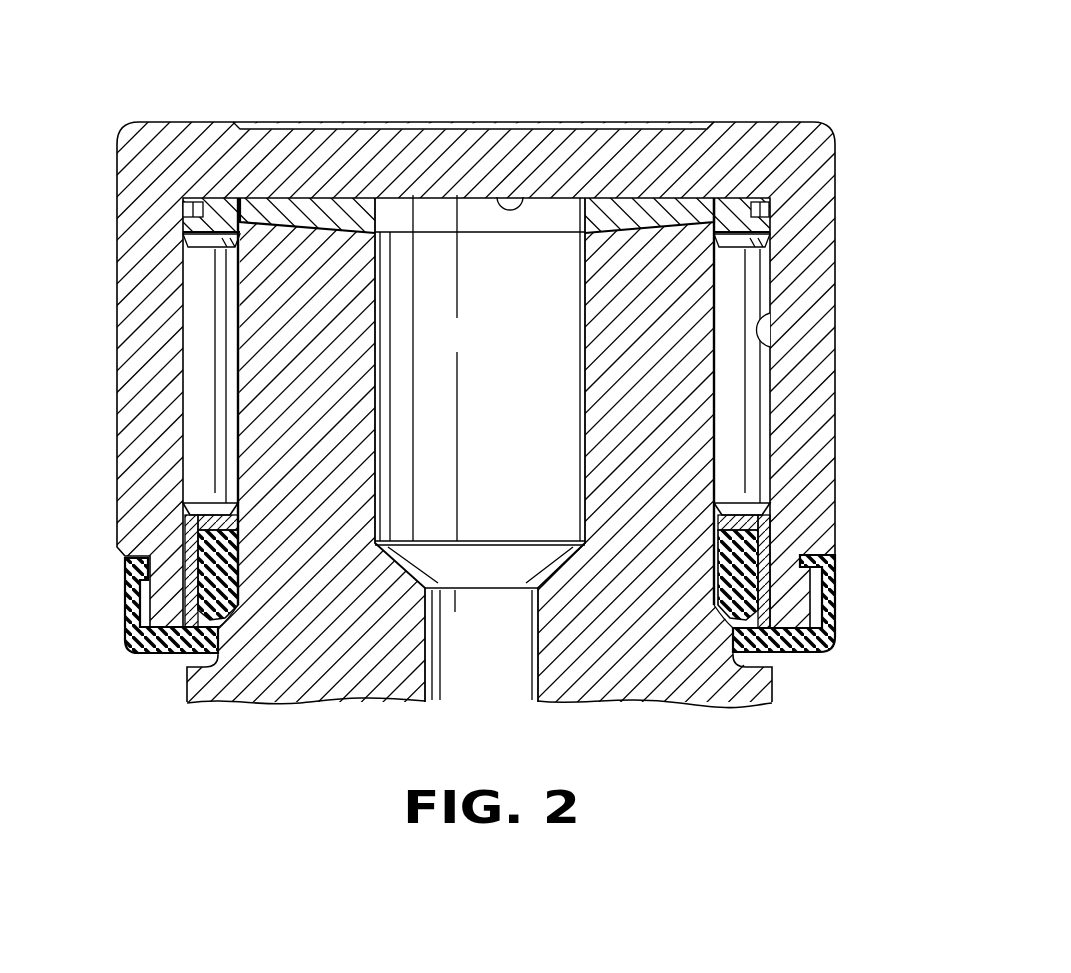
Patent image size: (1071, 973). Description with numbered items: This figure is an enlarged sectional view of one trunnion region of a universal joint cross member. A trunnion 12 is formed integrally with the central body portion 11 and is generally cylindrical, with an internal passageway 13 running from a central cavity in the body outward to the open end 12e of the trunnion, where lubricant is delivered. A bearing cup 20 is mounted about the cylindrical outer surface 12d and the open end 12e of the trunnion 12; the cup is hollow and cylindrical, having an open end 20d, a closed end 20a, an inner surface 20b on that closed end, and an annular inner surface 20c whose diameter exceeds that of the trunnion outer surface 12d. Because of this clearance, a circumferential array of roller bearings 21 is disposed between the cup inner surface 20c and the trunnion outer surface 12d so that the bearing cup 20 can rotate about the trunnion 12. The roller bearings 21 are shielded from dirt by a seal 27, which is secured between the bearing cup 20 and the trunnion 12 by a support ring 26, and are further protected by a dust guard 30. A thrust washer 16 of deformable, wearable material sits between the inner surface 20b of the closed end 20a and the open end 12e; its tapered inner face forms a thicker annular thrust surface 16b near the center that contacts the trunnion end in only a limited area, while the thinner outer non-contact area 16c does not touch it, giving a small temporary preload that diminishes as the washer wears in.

The central body portion 11 is at (653, 680).
The trunnion 12 is at (260, 343).
The cylindrical outer surface 12d is at (237, 408).
The open end 12e is at (271, 222).
The internal passageway 13 is at (447, 257).
The thrust washer 16 is at (615, 190).
The thrust surface 16b is at (362, 236).
The non-contact area 16c is at (243, 220).
The bearing cup 20 is at (370, 122).
The closed end 20a is at (777, 125).
The inner surface of the closed end 20b is at (523, 200).
The annular-shaped inner surface 20c is at (770, 330).
The open end 20d is at (797, 653).
The roller bearings 21 is at (195, 290).
The support ring 26 is at (750, 523).
The seal 27 is at (207, 561).
The dust guard 30 is at (115, 594).